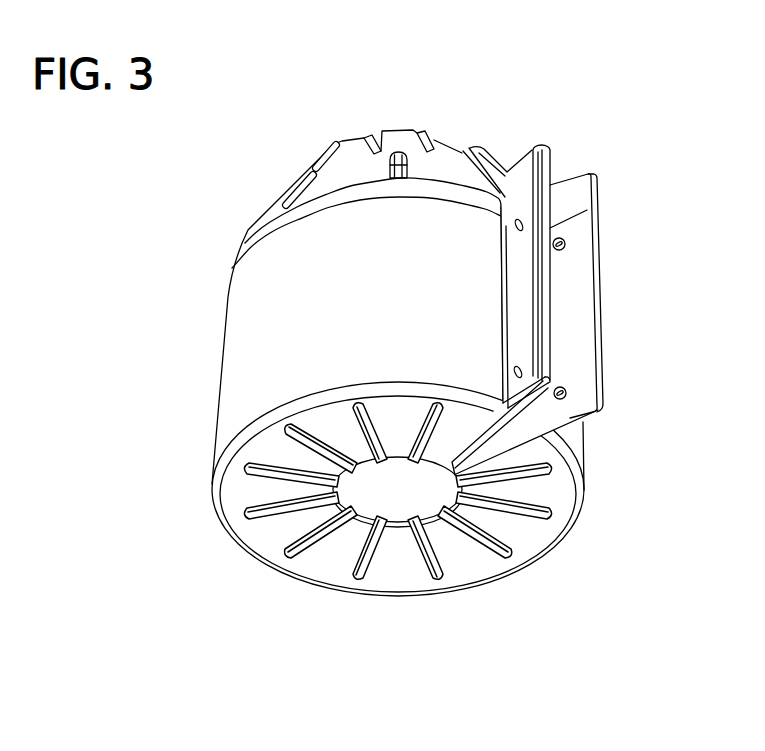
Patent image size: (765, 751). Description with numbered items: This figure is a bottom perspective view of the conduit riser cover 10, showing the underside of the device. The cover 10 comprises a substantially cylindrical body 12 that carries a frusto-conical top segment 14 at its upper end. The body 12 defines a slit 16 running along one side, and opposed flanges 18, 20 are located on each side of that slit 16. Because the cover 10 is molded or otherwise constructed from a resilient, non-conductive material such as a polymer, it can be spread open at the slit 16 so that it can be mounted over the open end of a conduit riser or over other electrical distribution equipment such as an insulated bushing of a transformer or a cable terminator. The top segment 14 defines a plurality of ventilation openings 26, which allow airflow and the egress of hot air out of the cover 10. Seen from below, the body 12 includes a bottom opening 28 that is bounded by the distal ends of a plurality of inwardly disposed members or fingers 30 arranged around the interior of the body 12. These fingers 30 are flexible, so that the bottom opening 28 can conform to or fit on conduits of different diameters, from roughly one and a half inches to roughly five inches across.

The conduit riser cover 10 is at (172, 270).
The cylindrical body 12 is at (236, 364).
The frusto-conical top segment 14 is at (278, 194).
The slit 16 is at (566, 165).
The flange 18 is at (578, 333).
The flange 20 is at (518, 296).
The ventilation openings 26 is at (407, 163).
The bottom opening 28 is at (403, 497).
The fingers 30 is at (347, 442).